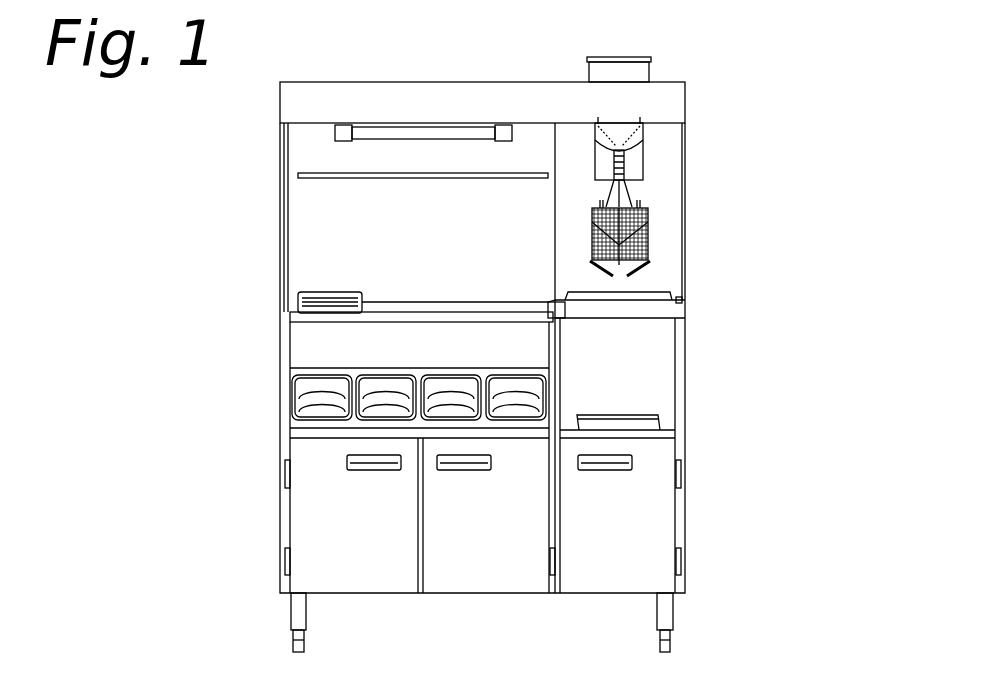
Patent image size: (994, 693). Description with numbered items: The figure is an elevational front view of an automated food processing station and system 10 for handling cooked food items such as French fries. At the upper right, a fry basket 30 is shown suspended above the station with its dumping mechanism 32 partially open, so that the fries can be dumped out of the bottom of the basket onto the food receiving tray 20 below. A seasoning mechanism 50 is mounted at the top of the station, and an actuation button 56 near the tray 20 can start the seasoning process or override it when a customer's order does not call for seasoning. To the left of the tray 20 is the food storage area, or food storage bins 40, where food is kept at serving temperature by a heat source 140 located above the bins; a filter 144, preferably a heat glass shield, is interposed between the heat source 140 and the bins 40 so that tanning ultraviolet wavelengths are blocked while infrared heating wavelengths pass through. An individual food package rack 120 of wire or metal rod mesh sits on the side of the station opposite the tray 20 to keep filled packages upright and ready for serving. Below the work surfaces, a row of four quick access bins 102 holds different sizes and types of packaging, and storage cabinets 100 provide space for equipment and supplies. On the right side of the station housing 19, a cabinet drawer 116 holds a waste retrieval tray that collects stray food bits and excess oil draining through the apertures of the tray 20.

The automated food processing station and system 10 is at (172, 393).
The station housing 19 is at (688, 503).
The food receiving tray 20 is at (666, 286).
The fry basket 30 is at (645, 236).
The dumping mechanism 32 is at (578, 211).
The food storage bins 40 is at (437, 305).
The seasoning mechanism 50 is at (640, 73).
The actuation button 56 is at (685, 300).
The storage cabinets 100 is at (453, 567).
The quick access bins 102 is at (320, 418).
The cabinet drawer 116 is at (655, 383).
The individual food package rack 120 is at (300, 296).
The heat source 140 is at (396, 138).
The filter 144 is at (327, 177).